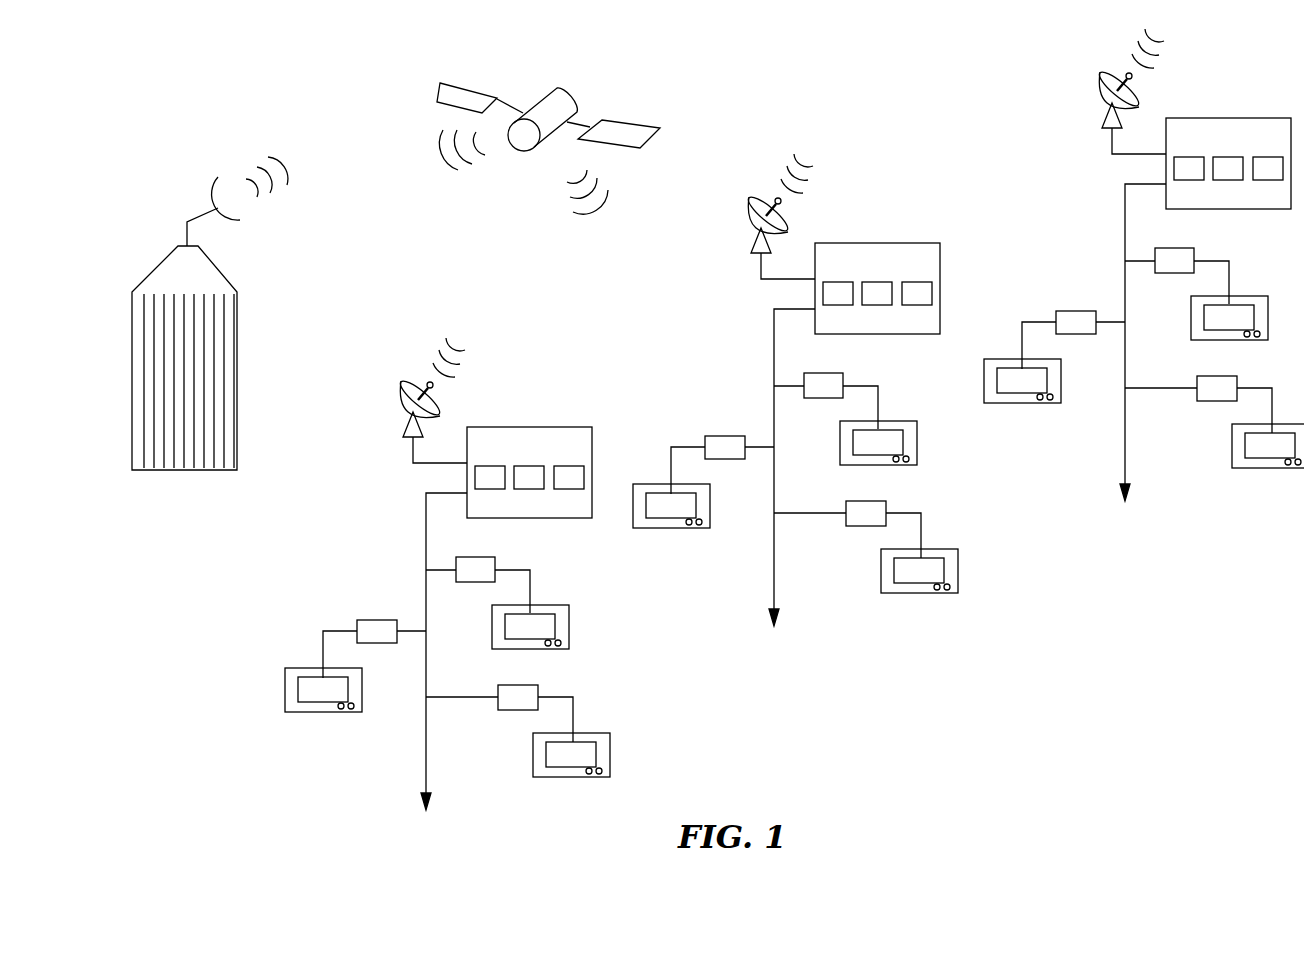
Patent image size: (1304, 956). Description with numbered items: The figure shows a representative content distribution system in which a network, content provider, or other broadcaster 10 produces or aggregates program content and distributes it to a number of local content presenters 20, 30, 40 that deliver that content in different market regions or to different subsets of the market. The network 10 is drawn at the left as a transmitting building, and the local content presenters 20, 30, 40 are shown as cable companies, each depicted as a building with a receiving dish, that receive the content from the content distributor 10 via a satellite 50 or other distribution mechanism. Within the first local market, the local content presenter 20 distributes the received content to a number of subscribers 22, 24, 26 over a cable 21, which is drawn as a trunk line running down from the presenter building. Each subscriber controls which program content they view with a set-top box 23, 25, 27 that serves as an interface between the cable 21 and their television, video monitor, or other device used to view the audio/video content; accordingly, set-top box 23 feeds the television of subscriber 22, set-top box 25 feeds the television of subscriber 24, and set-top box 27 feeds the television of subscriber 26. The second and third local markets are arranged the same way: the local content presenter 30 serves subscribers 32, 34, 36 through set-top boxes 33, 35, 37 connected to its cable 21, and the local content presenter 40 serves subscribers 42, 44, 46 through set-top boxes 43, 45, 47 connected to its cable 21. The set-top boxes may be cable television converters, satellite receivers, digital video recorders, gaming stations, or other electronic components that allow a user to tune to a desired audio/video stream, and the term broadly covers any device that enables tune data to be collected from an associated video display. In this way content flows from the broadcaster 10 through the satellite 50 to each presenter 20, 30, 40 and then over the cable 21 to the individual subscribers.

The broadcaster 10 is at (237, 337).
The satellite 50 is at (565, 93).
The cable 21 is at (425, 530).
The local content presenter 20 is at (494, 428).
The subscriber 22 is at (323, 681).
The set-top box 23 is at (374, 639).
The subscriber 24 is at (530, 619).
The set-top box 25 is at (478, 575).
The subscriber 26 is at (571, 746).
The set-top box 27 is at (499, 704).
The local content presenter 30 is at (842, 244).
The subscriber 32 is at (671, 497).
The set-top box 33 is at (722, 455).
The subscriber 34 is at (878, 435).
The set-top box 35 is at (826, 391).
The subscriber 36 is at (919, 562).
The set-top box 37 is at (847, 520).
The local content presenter 40 is at (1193, 119).
The subscriber 42 is at (1022, 372).
The set-top box 43 is at (1073, 330).
The subscriber 44 is at (1229, 310).
The set-top box 45 is at (1177, 266).
The subscriber 46 is at (1268, 437).
The set-top box 47 is at (1198, 395).